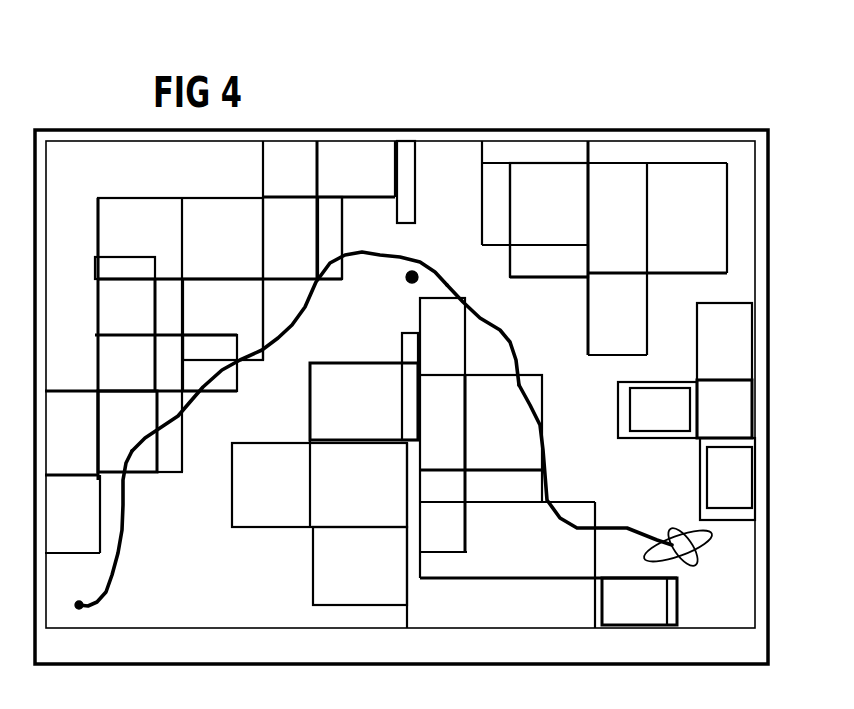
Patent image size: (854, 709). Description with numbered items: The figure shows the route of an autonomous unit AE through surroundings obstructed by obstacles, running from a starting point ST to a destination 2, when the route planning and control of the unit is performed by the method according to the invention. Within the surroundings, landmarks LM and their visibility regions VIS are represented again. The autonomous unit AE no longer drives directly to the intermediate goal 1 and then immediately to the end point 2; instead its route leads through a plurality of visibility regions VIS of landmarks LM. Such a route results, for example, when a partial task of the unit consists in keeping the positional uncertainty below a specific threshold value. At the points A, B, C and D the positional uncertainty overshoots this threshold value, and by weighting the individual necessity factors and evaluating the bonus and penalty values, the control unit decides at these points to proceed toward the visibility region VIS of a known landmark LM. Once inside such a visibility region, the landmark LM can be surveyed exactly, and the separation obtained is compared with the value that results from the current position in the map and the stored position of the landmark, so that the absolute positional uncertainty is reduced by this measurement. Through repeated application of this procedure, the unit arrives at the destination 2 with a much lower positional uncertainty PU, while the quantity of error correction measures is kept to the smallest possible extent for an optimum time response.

The intermediate goal 1 is at (415, 272).
The destination 2 is at (696, 541).
The point A is at (118, 589).
The point B is at (302, 320).
The point C is at (510, 332).
The point D is at (551, 420).
The starting point ST is at (71, 586).
The autonomous unit AE is at (680, 538).
The positional uncertainty PU is at (708, 541).
The landmark LM is at (265, 242).
The visibility region VIS is at (184, 305).